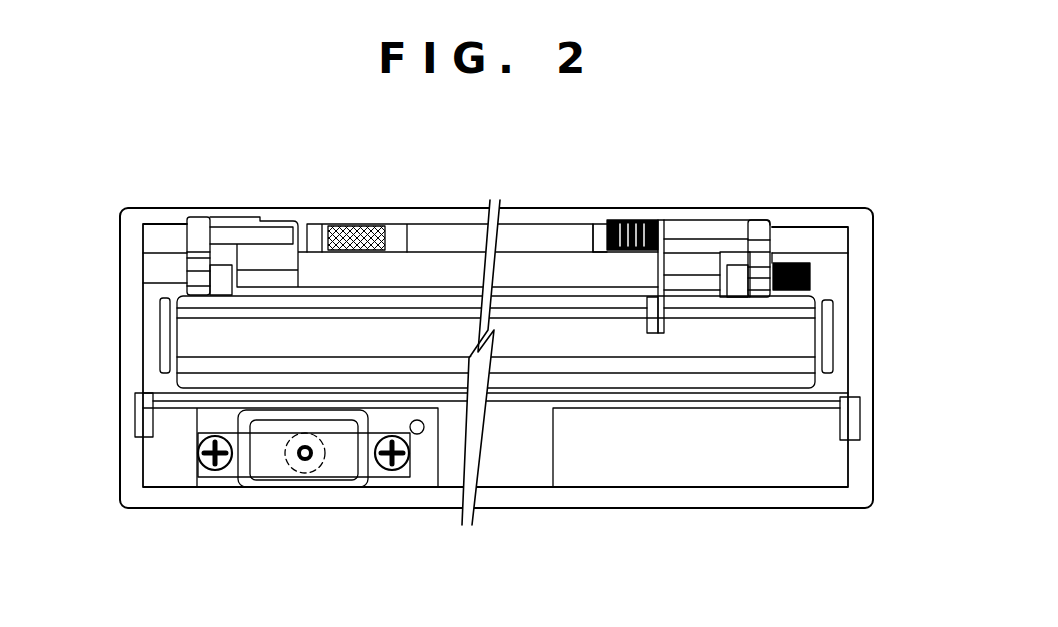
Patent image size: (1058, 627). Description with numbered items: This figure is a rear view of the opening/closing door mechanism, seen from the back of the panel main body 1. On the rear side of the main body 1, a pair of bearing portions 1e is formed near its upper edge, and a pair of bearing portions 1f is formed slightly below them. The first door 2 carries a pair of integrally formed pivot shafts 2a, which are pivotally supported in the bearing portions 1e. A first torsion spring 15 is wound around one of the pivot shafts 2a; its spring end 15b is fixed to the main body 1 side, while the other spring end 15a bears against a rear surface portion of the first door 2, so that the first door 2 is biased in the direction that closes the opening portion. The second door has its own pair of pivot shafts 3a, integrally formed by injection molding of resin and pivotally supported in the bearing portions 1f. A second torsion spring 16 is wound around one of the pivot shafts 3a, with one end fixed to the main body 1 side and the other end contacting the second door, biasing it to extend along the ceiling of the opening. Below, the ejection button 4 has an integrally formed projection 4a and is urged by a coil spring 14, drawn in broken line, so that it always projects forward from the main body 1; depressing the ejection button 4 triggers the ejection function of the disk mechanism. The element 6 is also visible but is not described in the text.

The panel main body 1 is at (851, 328).
The bearing portion 1e is at (197, 230).
The bearing portion 1f is at (223, 282).
The first door 2 is at (607, 330).
The pivot shaft 2a is at (227, 238).
The pivot shaft 3a is at (197, 273).
The ejection button 4 is at (353, 487).
The projection 4a is at (305, 460).
The cushion member 6 is at (350, 240).
The coil spring 14 is at (292, 470).
The first torsion spring 15 is at (637, 217).
The spring end 15a is at (663, 337).
The first torsion spring end 15b is at (603, 217).
The second torsion spring 16 is at (808, 256).